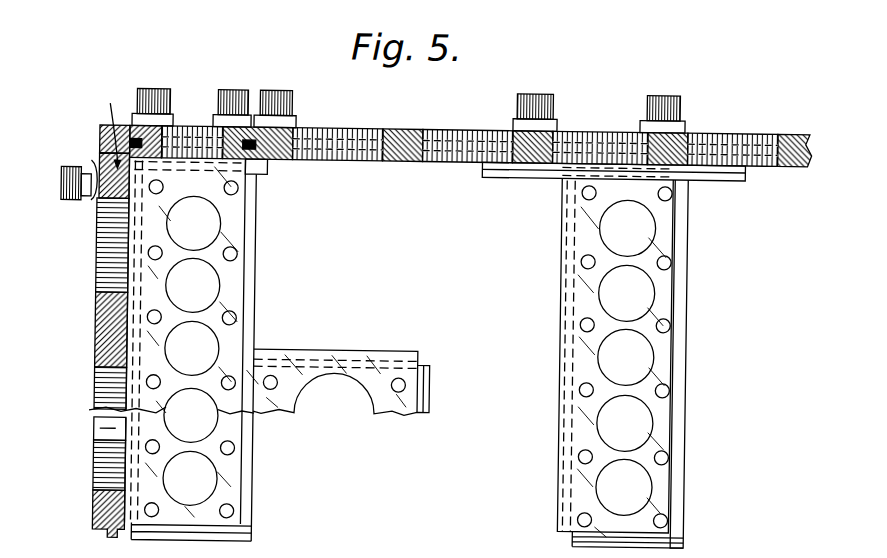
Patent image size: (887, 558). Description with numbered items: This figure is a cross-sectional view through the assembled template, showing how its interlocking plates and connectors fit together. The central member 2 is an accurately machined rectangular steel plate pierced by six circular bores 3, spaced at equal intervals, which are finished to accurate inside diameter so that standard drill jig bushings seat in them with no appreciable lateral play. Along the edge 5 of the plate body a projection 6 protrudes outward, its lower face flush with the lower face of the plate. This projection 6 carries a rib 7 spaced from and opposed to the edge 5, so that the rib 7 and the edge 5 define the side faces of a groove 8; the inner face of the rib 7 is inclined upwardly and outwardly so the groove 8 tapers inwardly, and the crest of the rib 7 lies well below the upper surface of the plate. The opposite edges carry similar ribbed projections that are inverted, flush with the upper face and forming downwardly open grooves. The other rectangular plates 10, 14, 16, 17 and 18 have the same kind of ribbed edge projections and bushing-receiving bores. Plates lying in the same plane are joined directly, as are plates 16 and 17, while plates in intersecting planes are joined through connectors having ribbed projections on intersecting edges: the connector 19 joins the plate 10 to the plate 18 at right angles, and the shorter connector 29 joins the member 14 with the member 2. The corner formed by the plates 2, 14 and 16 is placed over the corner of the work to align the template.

The member 2 is at (228, 128).
The circular bores 3 is at (173, 139).
The edge of the plate body 5 is at (128, 137).
The projection 6 is at (100, 150).
The rib 7 is at (100, 135).
The groove 8 is at (110, 104).
The rectangular plate 10 is at (396, 129).
The rectangular plate 14 is at (111, 330).
The rectangular plate 16 is at (234, 275).
The rectangular plate 17 is at (353, 351).
The rectangular plate 18 is at (668, 344).
The connector 19 is at (528, 170).
The connector 29 is at (118, 130).